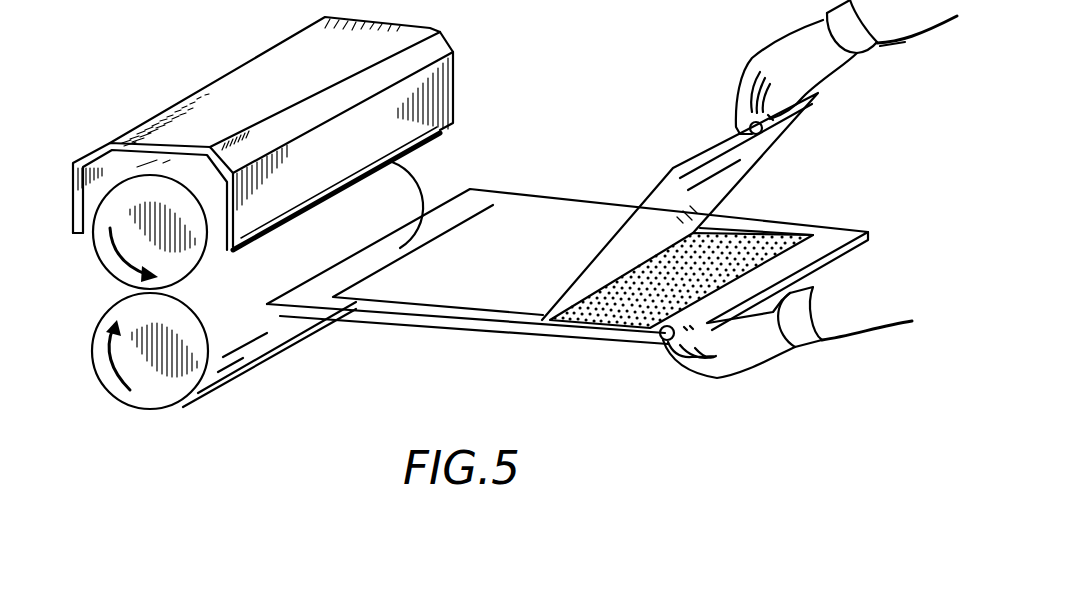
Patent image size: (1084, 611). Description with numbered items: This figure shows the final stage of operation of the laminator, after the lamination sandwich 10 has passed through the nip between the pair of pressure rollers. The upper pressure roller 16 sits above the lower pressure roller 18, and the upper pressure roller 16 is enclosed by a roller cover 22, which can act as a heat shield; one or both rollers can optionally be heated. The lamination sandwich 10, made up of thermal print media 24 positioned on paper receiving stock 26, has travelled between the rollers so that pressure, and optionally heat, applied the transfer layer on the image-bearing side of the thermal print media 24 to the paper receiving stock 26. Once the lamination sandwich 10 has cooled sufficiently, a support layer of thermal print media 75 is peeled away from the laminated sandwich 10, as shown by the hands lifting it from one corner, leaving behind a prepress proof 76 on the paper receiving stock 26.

The lamination sandwich 10 is at (606, 204).
The upper pressure roller 16 is at (424, 146).
The lower pressure roller 18 is at (238, 352).
The roller cover 22 is at (260, 70).
The thermal print media 24 is at (482, 295).
The paper receiving stock 26 is at (480, 203).
The support layer of thermal print media 75 is at (768, 147).
The prepress proof 76 is at (767, 242).